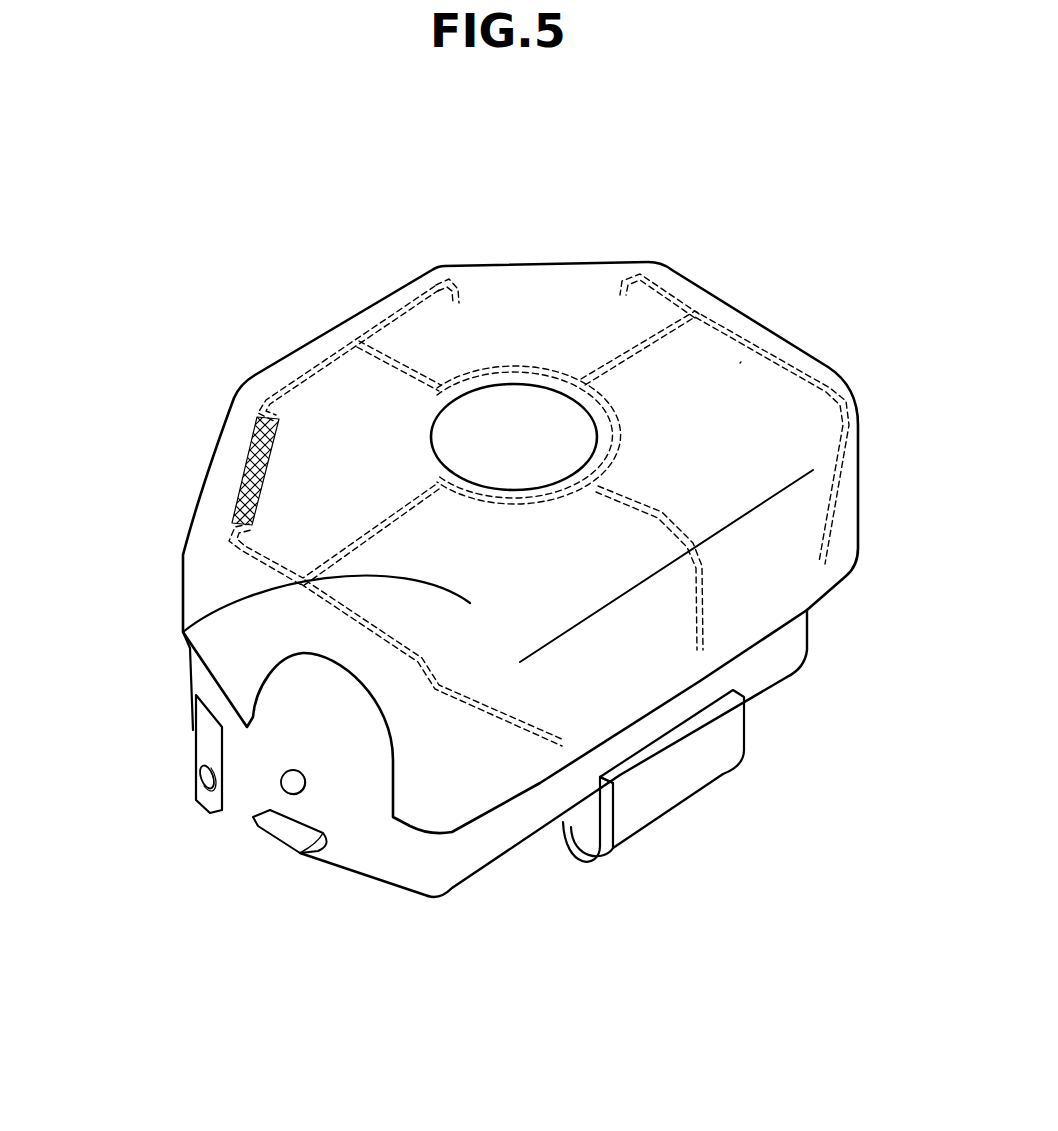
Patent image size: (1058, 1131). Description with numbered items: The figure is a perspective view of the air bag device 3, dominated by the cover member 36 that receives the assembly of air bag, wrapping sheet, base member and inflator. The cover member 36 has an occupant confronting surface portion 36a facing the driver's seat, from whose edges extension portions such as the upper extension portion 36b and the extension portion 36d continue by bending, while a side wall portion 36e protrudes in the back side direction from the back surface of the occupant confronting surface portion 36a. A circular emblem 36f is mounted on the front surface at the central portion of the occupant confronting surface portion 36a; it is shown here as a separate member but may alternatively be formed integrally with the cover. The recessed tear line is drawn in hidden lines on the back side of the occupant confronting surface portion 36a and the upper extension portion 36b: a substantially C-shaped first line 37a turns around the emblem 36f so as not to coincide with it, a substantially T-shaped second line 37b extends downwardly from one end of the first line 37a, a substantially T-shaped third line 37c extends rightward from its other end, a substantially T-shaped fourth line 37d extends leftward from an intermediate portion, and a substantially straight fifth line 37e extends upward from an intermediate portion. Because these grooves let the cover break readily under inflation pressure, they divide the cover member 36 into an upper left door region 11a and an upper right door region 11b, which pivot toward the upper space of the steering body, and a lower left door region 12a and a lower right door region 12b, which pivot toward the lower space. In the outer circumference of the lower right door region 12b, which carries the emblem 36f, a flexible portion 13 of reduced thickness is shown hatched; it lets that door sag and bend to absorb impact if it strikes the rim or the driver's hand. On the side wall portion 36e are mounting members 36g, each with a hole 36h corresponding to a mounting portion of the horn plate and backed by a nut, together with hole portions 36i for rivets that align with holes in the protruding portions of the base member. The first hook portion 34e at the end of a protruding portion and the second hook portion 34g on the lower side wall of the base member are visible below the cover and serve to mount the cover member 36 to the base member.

The air bag device 3 is at (186, 276).
The cover member 36 is at (752, 296).
The occupant confronting surface portion 36a is at (328, 325).
The upper extension portion 36b is at (523, 793).
The extension portion 36d is at (253, 717).
The side wall portion 36e is at (810, 632).
The emblem 36f is at (512, 437).
The mounting member 36g is at (203, 727).
The hole 36h is at (201, 780).
The hole portion 36i is at (283, 785).
The first hook portion 34e is at (267, 833).
The second hook portion 34g is at (680, 773).
The upper left door region 11a is at (740, 363).
The upper right door region 11b is at (183, 632).
The lower left door region 12a is at (497, 310).
The lower right door region 12b is at (357, 430).
The flexible portion 13 is at (247, 458).
The first line 37a is at (623, 437).
The second line 37b is at (398, 366).
The third line 37c is at (243, 552).
The fourth line 37d is at (640, 358).
The fifth line 37e is at (700, 613).